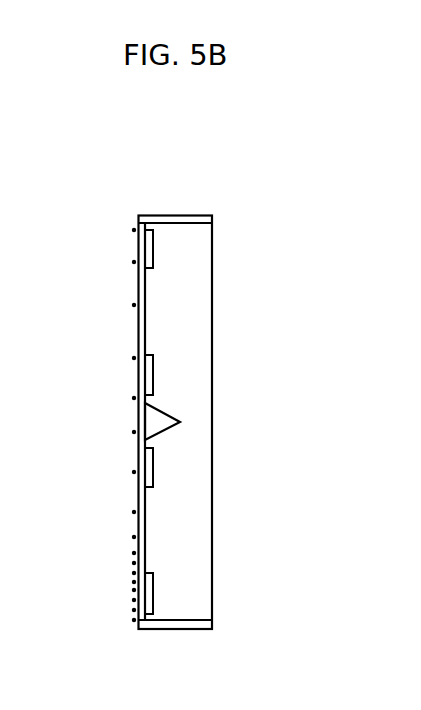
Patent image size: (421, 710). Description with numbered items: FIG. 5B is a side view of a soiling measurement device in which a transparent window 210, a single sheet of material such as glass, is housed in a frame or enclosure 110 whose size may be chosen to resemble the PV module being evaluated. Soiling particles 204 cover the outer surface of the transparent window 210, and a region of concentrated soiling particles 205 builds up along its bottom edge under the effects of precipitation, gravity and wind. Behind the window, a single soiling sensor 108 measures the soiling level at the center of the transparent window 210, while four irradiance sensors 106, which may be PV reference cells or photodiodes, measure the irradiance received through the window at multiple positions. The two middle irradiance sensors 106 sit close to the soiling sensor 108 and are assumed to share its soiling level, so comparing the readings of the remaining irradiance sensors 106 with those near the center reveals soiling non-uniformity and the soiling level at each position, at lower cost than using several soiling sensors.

The frame or enclosure 110 is at (204, 637).
The transparent window 210 is at (156, 335).
The irradiance sensors 106 is at (164, 467).
The soiling sensor 108 is at (192, 422).
The soiling particles 204 is at (119, 309).
The region of concentrated soiling particles 205 is at (125, 586).